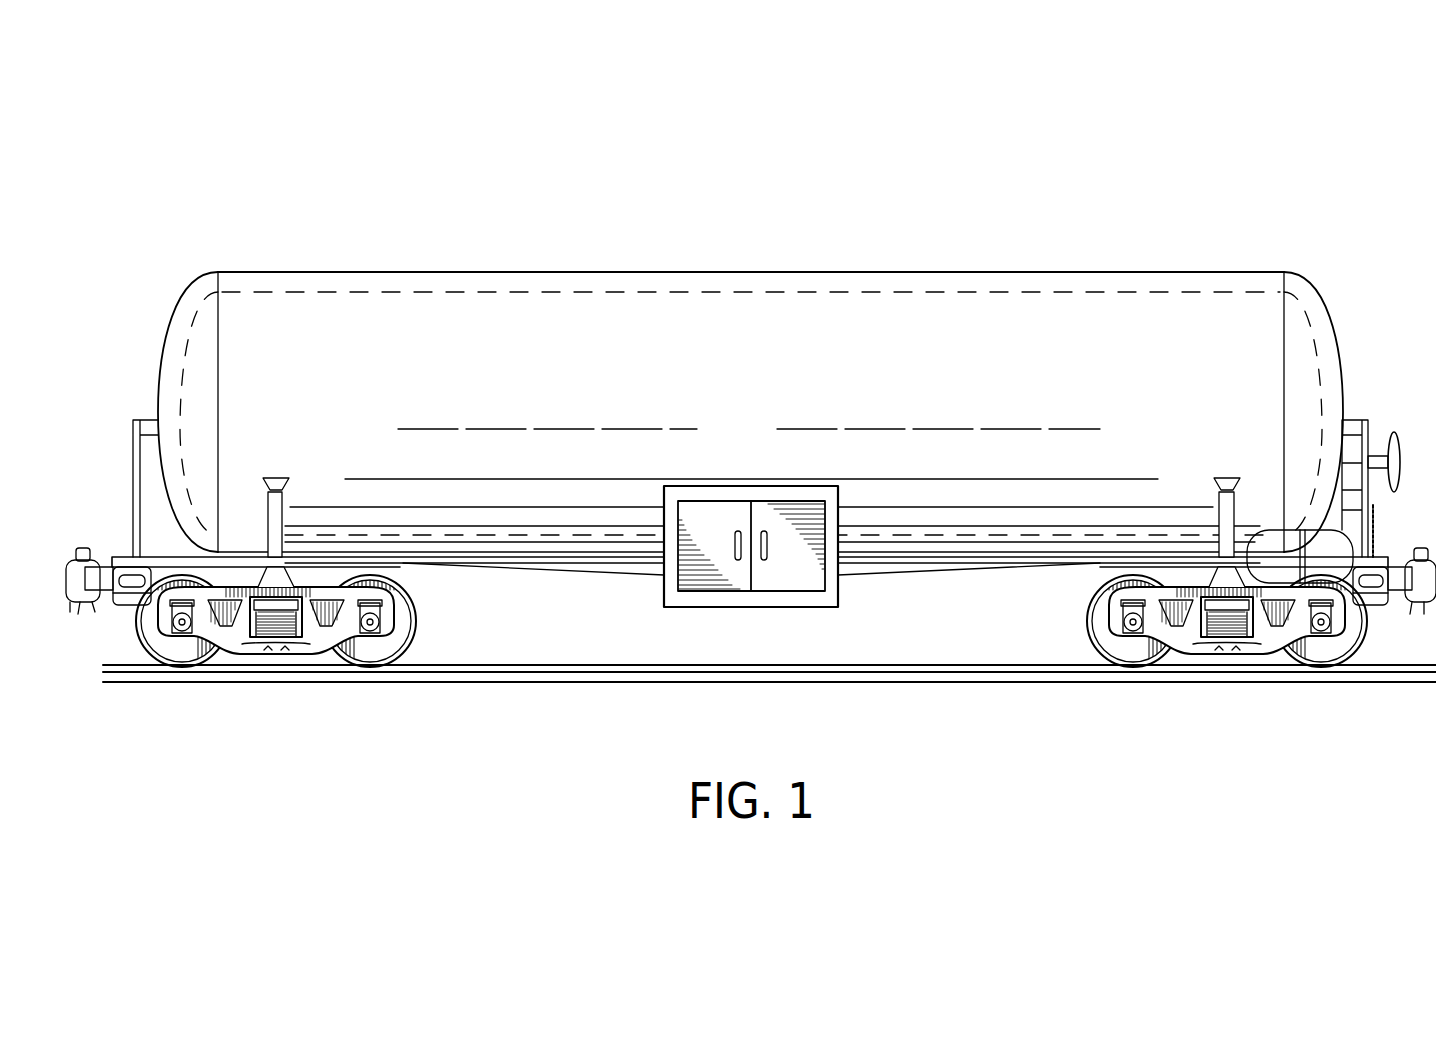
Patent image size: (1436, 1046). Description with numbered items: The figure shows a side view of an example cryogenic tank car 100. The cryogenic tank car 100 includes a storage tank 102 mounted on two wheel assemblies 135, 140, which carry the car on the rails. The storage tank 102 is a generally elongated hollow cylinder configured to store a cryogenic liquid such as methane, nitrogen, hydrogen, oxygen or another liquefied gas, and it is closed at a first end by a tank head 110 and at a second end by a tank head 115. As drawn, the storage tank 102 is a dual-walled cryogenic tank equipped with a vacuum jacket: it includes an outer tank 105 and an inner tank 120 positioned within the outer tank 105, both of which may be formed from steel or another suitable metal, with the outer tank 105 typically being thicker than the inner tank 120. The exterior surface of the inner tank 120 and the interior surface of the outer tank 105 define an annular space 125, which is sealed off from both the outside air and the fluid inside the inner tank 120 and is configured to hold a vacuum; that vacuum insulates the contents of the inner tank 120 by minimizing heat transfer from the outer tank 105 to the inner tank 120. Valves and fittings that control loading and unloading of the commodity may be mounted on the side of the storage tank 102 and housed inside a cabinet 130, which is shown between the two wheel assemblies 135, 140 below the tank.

The cryogenic tank car 100 is at (290, 137).
The storage tank 102 is at (412, 366).
The outer tank 105 is at (604, 272).
The tank head 110 is at (176, 312).
The tank head 115 is at (1326, 312).
The inner tank 120 is at (984, 292).
The annular space 125 is at (803, 281).
The cabinet 130 is at (750, 486).
The wheel assembly 135 is at (305, 643).
The wheel assembly 140 is at (1190, 643).